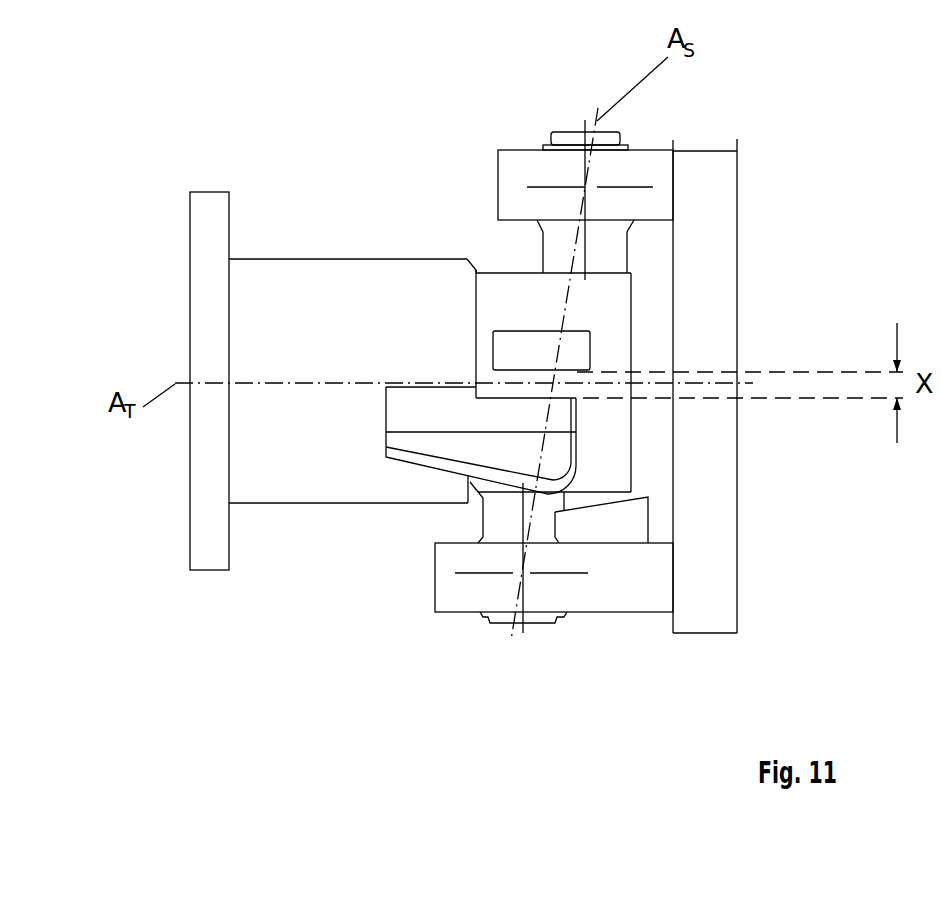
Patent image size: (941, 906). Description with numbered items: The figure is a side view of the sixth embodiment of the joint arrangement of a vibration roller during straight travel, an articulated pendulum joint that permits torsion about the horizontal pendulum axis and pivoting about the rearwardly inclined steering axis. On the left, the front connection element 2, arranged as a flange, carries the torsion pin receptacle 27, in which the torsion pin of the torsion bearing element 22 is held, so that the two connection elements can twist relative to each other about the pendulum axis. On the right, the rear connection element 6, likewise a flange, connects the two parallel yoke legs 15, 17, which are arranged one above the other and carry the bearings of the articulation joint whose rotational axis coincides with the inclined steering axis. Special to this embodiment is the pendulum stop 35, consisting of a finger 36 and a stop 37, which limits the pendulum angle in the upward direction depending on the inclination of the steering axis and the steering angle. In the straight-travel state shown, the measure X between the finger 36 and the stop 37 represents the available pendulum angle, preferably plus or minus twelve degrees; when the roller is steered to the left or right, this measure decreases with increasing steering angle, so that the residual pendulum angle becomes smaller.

The front connection element 2 is at (208, 502).
The torsion pin receptacle 27 is at (397, 313).
The torsion bearing element 22 is at (608, 313).
The stop 37 is at (575, 360).
The pendulum stop 35 is at (600, 382).
The finger 36 is at (565, 420).
The rear connection element 6 is at (713, 253).
The yoke leg 17 is at (643, 168).
The yoke leg 15 is at (457, 598).